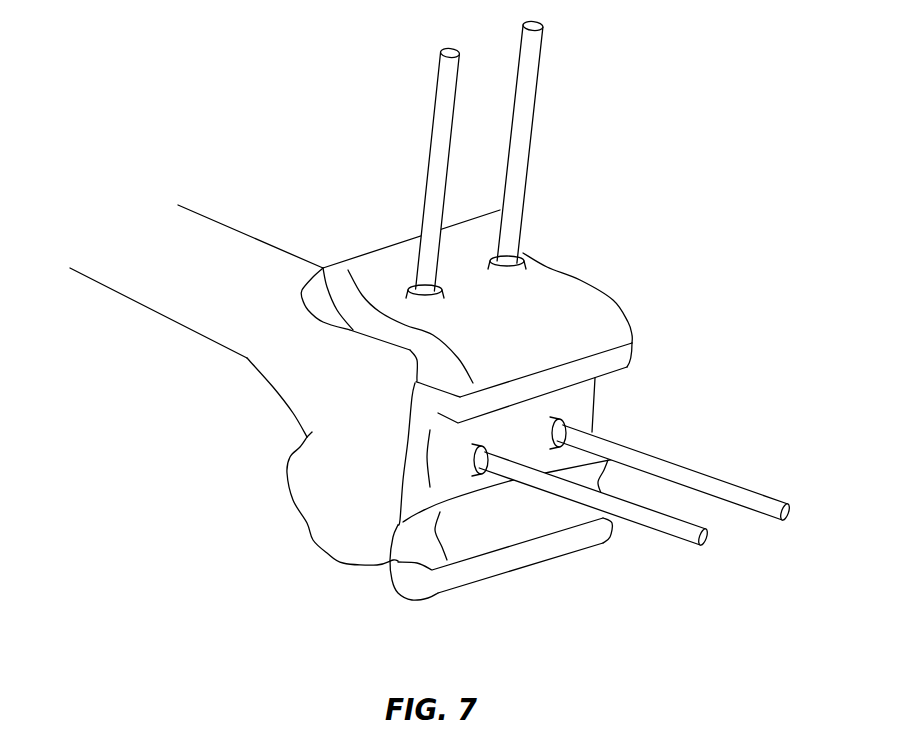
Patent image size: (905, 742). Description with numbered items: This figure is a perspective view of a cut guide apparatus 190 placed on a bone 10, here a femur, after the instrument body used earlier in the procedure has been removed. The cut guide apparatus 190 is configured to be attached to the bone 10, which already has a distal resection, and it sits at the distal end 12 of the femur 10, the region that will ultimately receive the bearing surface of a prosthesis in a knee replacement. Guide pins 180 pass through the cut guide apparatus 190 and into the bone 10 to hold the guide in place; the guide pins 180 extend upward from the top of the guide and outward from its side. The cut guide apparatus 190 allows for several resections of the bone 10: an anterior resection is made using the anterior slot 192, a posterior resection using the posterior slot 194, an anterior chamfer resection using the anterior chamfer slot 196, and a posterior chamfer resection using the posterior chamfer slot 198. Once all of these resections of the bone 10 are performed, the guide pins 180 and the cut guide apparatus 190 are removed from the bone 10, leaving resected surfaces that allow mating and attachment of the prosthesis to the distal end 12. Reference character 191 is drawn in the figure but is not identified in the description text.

The bone 10 is at (218, 327).
The distal end of the femur 12 is at (310, 497).
The guide pins 180 is at (428, 167).
The cut guide apparatus 190 is at (563, 292).
The pin bushings 191 is at (515, 253).
The anterior slot 192 is at (635, 347).
The posterior slot 194 is at (428, 572).
The anterior chamfer slot 196 is at (323, 268).
The posterior chamfer slot 198 is at (417, 523).